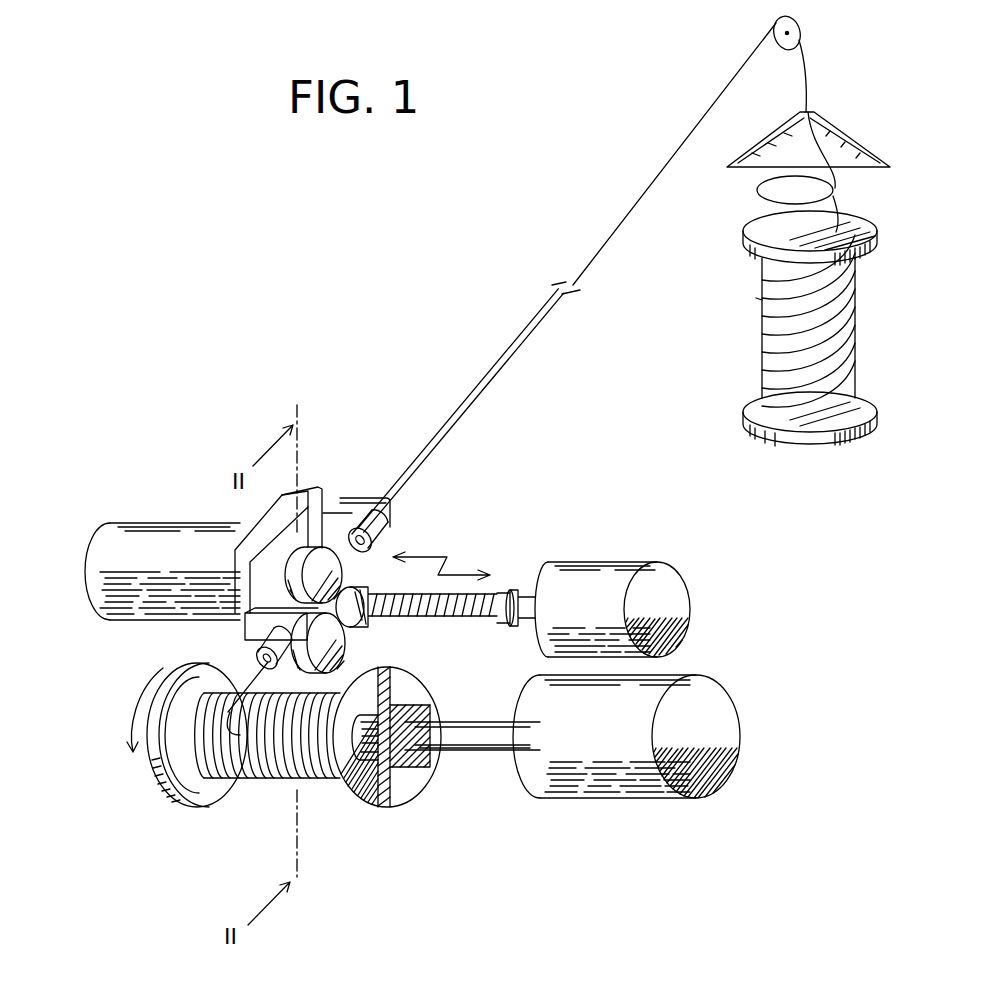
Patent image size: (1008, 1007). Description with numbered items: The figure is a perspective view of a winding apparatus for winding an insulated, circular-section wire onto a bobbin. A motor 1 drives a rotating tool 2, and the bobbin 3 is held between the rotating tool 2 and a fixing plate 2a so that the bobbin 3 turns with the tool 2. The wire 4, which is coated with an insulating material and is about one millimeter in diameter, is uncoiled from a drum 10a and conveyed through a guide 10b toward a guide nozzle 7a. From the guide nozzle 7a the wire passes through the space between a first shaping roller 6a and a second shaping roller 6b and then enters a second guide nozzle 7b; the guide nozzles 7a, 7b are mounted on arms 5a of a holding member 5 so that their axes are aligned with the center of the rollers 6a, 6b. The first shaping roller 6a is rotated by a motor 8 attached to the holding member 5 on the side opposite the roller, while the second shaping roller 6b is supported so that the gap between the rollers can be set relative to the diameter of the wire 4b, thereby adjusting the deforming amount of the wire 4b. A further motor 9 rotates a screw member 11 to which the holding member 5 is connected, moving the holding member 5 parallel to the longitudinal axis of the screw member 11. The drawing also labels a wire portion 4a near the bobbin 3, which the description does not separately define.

The motor 1 is at (598, 800).
The rotating tool 2 is at (418, 792).
The fixing plate 2a is at (150, 762).
The bobbin 3 is at (366, 805).
The wire 4 is at (838, 345).
The wire portion 4a is at (238, 666).
The wire 4b is at (438, 460).
The holding member 5 is at (298, 488).
The arms 5a is at (354, 498).
The first shaping roller 6a is at (362, 612).
The second shaping roller 6b is at (358, 655).
The guide nozzle 7a is at (392, 536).
The guide nozzle 7b is at (270, 655).
The motor 8 is at (125, 548).
The motor 9 is at (596, 570).
The drum 10a is at (872, 248).
The guide 10b is at (838, 128).
The screw member 11 is at (462, 592).